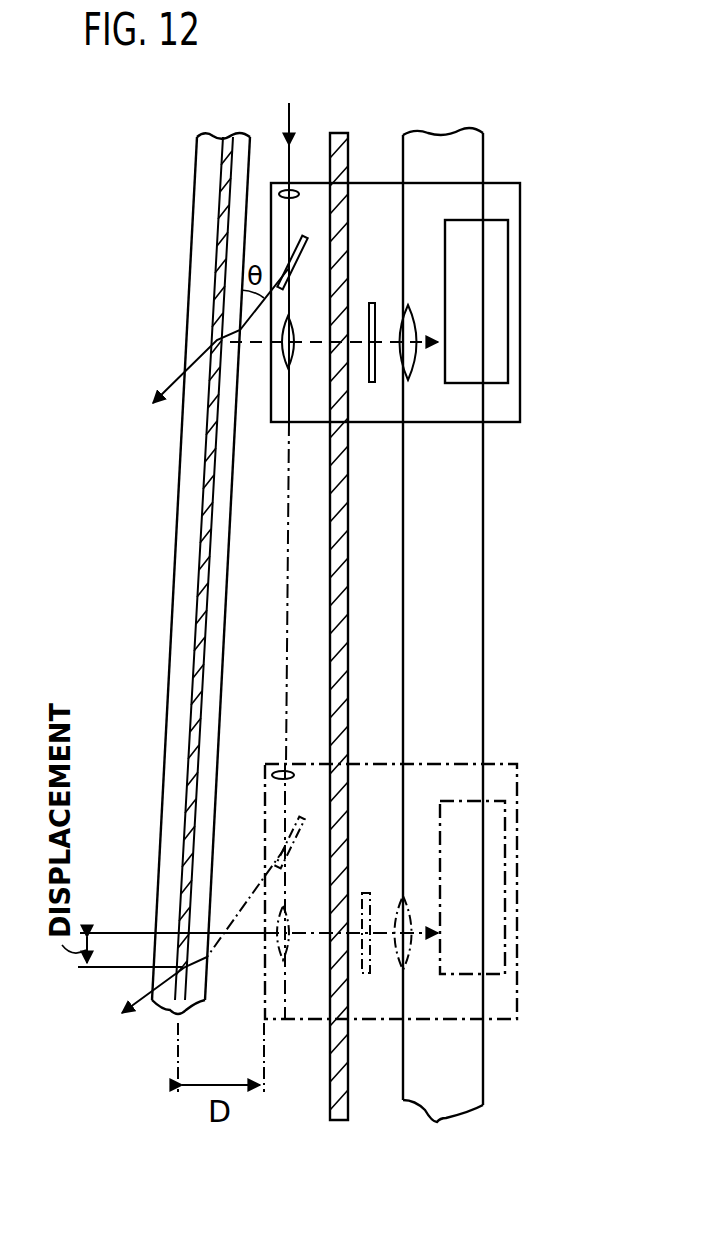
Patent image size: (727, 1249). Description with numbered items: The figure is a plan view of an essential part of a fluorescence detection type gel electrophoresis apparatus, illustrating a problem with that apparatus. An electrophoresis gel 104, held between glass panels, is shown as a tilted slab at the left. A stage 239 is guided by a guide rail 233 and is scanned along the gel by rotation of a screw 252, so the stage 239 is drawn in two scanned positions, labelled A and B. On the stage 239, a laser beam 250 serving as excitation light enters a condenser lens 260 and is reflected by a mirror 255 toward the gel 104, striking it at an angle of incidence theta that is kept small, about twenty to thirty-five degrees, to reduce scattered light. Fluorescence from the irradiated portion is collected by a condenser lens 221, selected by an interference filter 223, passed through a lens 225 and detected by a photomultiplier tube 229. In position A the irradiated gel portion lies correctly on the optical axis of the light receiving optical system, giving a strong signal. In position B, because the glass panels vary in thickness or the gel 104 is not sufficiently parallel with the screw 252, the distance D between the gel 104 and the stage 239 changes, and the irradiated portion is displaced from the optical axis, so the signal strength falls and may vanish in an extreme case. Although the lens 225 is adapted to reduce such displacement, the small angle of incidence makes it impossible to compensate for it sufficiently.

The electrophoresis gel 104 is at (203, 467).
The condenser lens 221 is at (293, 366).
The interference filter 223 is at (371, 380).
The lens 225 is at (415, 368).
The photomultiplier tube 229 is at (508, 243).
The guide rail 233 is at (483, 592).
The stage 239 is at (520, 195).
The laser beam 250 is at (294, 118).
The screw 252 is at (348, 485).
The mirror 255 is at (305, 255).
The condenser lens 260 is at (300, 196).